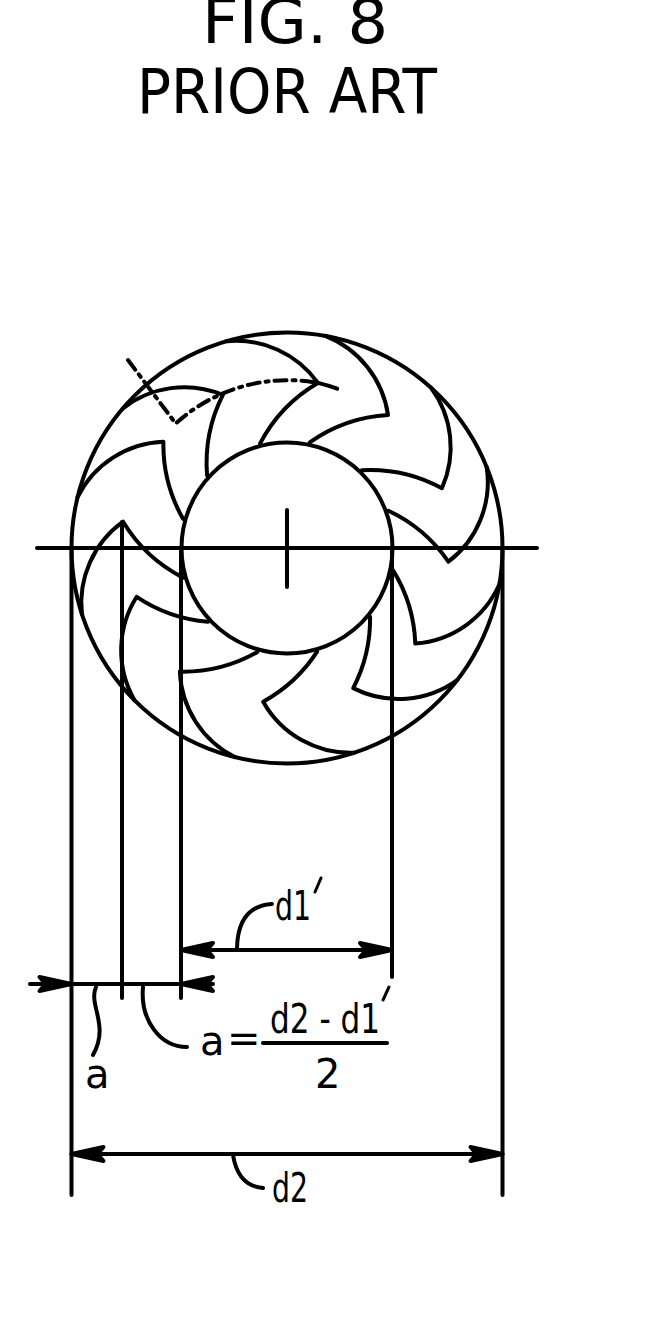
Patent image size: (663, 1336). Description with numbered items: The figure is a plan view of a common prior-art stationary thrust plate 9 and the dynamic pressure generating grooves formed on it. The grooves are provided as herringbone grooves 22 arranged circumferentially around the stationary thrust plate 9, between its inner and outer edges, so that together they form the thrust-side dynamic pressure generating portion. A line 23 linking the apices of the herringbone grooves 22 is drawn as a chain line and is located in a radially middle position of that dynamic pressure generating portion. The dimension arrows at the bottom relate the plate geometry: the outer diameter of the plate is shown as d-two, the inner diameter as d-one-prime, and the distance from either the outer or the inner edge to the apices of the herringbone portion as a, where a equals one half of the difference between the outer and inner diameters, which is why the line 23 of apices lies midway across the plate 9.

The stationary thrust plate 9 is at (473, 435).
The herringbone grooves 22 is at (403, 380).
The line linking apices of the herringbone grooves 23 is at (128, 360).